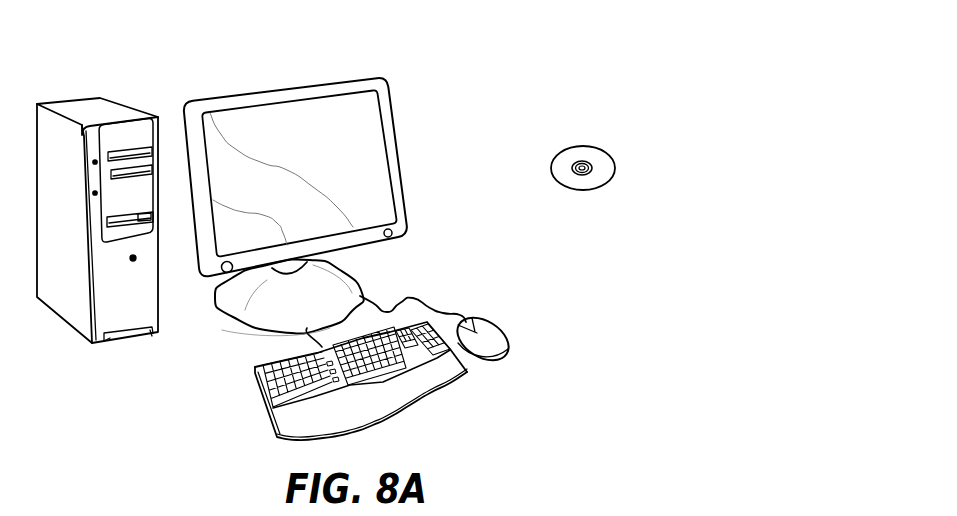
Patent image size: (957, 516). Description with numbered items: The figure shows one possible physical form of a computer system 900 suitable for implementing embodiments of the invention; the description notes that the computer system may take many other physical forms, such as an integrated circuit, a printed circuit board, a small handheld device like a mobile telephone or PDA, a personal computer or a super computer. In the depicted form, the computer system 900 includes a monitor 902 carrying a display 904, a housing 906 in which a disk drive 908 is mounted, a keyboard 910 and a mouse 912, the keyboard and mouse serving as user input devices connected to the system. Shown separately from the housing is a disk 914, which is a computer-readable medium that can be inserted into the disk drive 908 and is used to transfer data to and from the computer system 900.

The computer system 900 is at (511, 64).
The monitor 902 is at (400, 175).
The display 904 is at (358, 117).
The housing 906 is at (87, 108).
The disk drive 908 is at (143, 220).
The keyboard 910 is at (258, 408).
The mouse 912 is at (505, 333).
The disk 914 is at (600, 147).